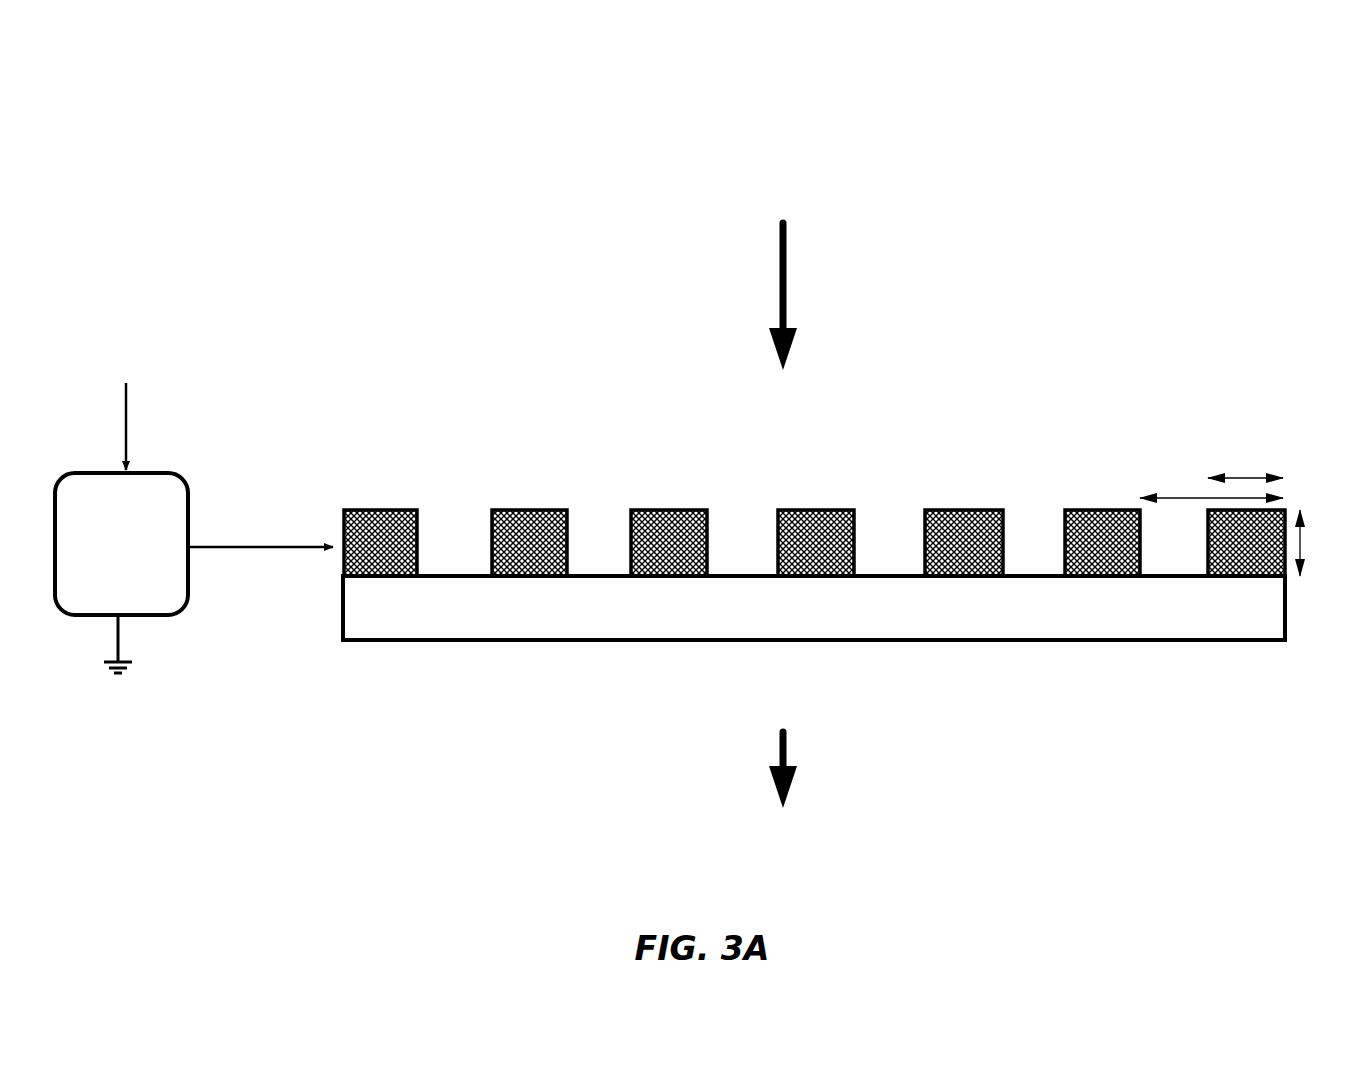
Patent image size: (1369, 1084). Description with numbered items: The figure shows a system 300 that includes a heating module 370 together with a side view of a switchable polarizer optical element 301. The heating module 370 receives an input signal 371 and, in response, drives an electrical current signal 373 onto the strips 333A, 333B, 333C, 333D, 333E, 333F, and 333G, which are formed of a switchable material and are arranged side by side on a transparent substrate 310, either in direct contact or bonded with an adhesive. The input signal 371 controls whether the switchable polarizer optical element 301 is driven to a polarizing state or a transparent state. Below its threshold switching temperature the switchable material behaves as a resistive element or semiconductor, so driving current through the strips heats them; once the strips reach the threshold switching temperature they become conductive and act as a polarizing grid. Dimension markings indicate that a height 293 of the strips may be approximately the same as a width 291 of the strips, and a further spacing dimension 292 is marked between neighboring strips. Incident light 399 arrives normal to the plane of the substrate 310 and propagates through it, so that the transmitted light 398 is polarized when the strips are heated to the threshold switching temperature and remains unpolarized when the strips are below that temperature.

The system 300 is at (1299, 67).
The switchable polarizer optical element 301 is at (1263, 396).
The transparent substrate 310 is at (573, 615).
The strip 333A is at (362, 551).
The strip 333B is at (511, 551).
The strip 333C is at (650, 551).
The strip 333D is at (797, 551).
The strip 333E is at (945, 551).
The strip 333F is at (1084, 551).
The strip 333G is at (1227, 551).
The heating module 370 is at (138, 569).
The input signal 371 is at (125, 409).
The electrical current signal 373 is at (260, 529).
The incident light 399 is at (783, 281).
The transmitted light 398 is at (783, 754).
The width 291 is at (1245, 461).
The feature pitch 292 is at (1211, 511).
The height 293 is at (1326, 543).